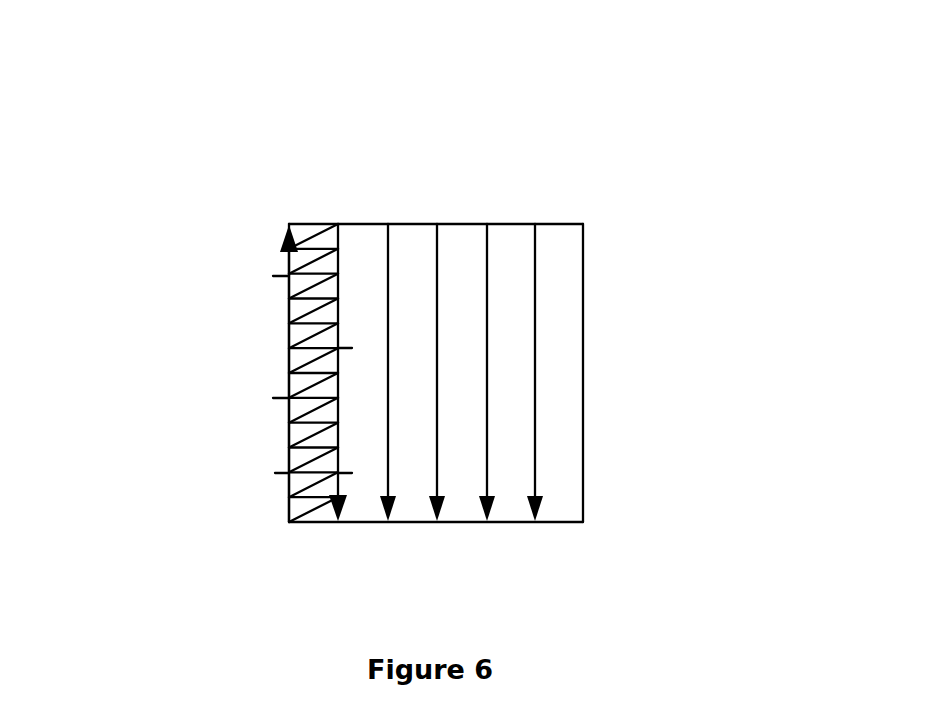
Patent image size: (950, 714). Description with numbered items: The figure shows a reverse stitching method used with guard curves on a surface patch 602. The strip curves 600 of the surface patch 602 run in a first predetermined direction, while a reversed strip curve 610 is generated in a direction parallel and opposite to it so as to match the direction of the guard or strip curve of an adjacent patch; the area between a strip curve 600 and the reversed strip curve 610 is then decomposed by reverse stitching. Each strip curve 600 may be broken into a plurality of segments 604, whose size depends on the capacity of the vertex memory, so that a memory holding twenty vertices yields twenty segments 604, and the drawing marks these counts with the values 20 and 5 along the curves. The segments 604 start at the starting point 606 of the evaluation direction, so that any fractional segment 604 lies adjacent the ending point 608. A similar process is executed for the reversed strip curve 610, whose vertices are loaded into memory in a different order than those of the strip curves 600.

The strip curves 600 is at (340, 248).
The surface patch 602 is at (583, 222).
The segments 604 is at (388, 323).
The starting point 606 is at (341, 224).
The ending point 608 is at (286, 226).
The reversed strip curve 610 is at (289, 357).
The dimension value 20 is at (306, 368).
The dimension value 5 is at (307, 375).